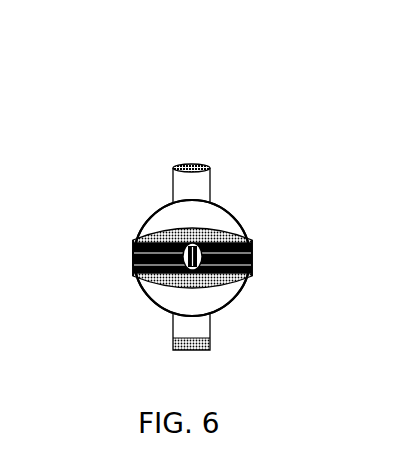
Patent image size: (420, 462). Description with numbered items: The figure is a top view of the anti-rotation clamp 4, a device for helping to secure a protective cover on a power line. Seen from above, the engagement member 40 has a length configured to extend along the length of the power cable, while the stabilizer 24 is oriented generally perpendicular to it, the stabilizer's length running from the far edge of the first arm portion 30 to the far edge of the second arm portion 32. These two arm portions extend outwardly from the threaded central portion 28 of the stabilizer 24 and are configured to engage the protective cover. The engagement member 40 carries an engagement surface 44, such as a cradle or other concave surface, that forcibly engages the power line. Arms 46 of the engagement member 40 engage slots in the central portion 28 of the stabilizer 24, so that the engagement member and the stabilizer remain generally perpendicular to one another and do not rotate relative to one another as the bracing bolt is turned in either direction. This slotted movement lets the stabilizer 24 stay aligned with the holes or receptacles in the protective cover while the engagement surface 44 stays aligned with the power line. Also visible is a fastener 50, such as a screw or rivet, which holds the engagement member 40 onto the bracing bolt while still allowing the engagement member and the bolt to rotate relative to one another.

The anti-rotation clamp 4 is at (141, 103).
The stabilizer 24 is at (245, 223).
The central portion 28 is at (222, 216).
The first arm portion 30 is at (190, 333).
The second arm portion 32 is at (197, 167).
The engagement member 40 is at (252, 259).
The engagement surface 44 is at (131, 257).
The arms 46 is at (132, 251).
The fastener 50 is at (185, 245).